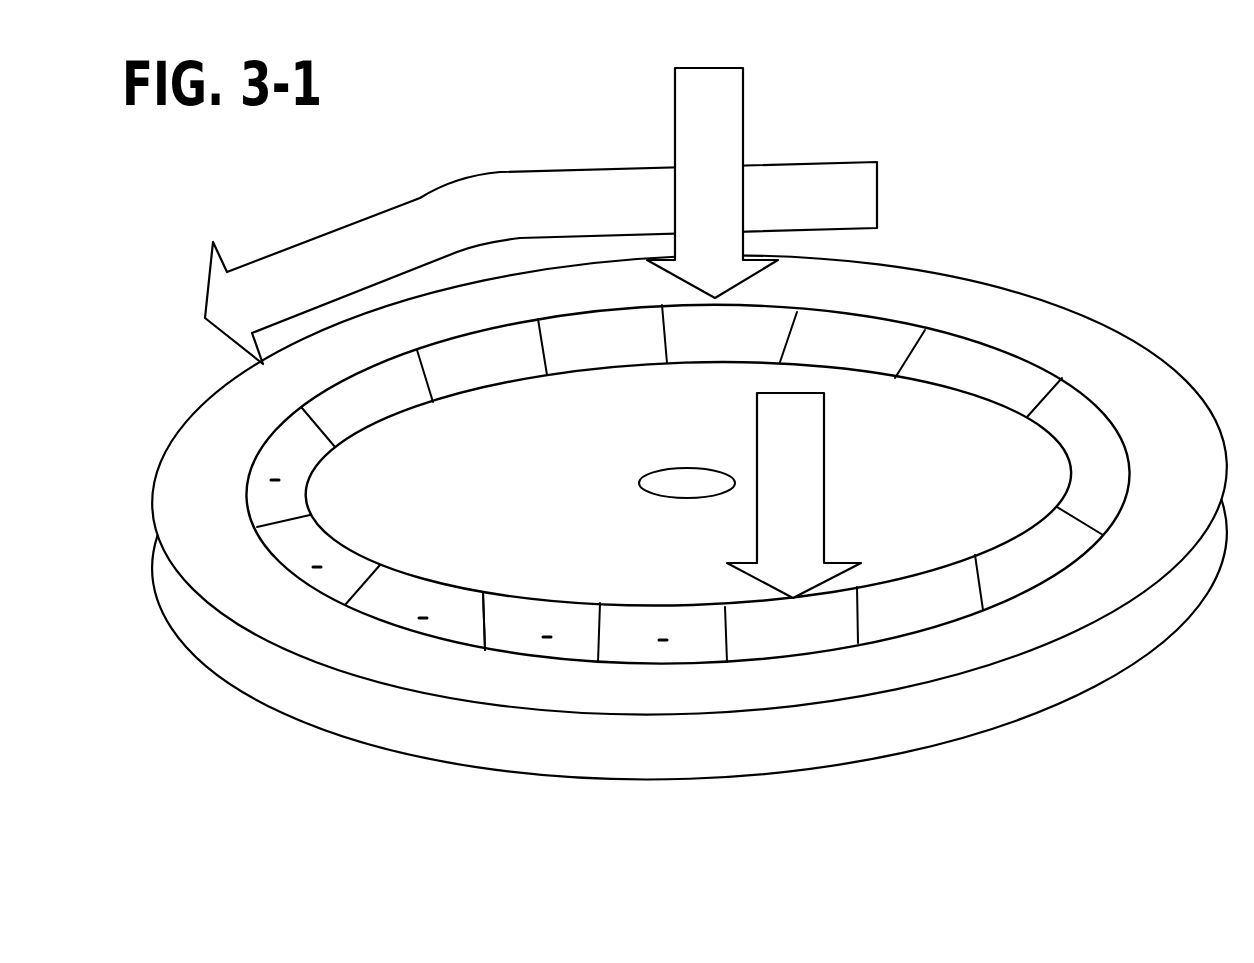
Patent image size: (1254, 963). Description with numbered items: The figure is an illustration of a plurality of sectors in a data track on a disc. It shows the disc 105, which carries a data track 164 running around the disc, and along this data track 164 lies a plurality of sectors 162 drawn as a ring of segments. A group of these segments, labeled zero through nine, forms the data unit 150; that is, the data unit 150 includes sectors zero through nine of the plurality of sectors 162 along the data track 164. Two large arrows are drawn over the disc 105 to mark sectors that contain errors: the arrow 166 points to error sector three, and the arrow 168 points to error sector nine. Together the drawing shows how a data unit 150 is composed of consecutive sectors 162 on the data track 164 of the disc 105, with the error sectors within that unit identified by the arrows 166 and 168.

The disc 105 is at (955, 205).
The data unit 150 is at (1045, 335).
The sectors 162 is at (468, 650).
The data track 164 is at (323, 593).
The arrow 166 is at (743, 98).
The arrow 168 is at (824, 517).